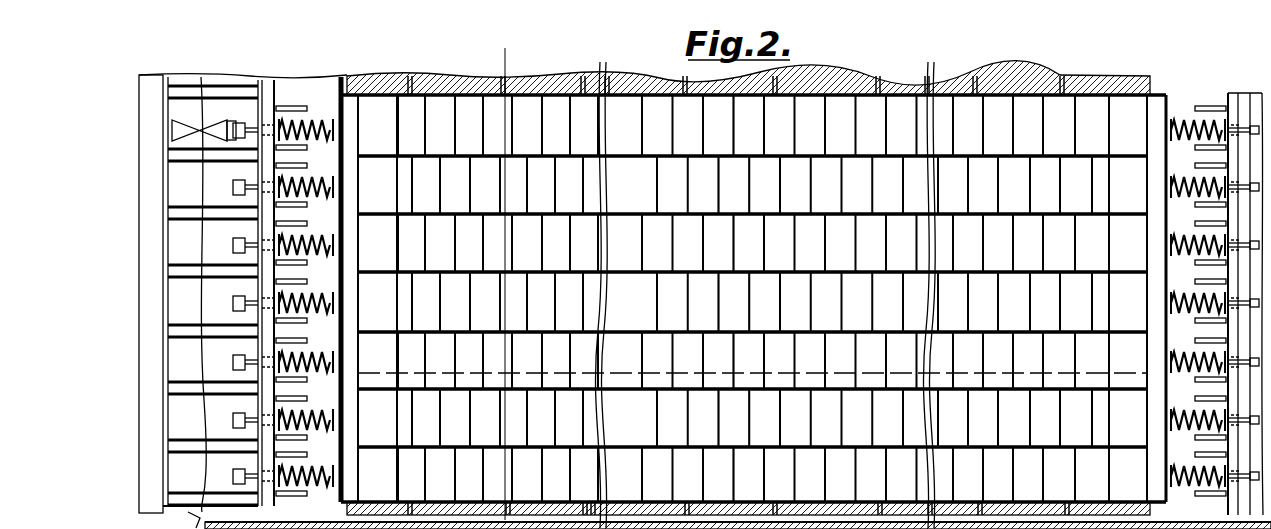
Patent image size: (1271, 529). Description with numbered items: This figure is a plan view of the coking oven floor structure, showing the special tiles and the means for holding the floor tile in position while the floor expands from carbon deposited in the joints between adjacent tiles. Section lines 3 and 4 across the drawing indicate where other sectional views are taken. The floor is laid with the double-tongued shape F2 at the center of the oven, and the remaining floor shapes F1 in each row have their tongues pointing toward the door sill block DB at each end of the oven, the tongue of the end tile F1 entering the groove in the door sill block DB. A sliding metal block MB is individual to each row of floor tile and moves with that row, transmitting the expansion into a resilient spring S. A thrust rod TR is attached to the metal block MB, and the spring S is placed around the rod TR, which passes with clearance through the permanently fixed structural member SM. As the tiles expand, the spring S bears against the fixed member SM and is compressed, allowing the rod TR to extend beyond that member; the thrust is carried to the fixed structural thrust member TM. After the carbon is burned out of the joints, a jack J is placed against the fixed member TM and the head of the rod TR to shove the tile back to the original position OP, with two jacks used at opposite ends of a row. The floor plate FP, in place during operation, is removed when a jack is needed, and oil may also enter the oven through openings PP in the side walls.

The structural thrust member TM is at (160, 48).
The structural member SM is at (265, 108).
The sliding metal block MB is at (345, 100).
The original position OP is at (356, 120).
The openings in the oven side walls PP is at (503, 78).
The spring S is at (1212, 516).
The door sill block DB is at (753, 298).
The floor shape F1 is at (745, 298).
The floor shape F2 is at (742, 298).
The jack J is at (204, 123).
The thrust rod TR is at (200, 162).
The floor plate FP is at (288, 526).
The section line 3- 3 is at (232, 373).
The section line 4- 4 is at (505, 48).